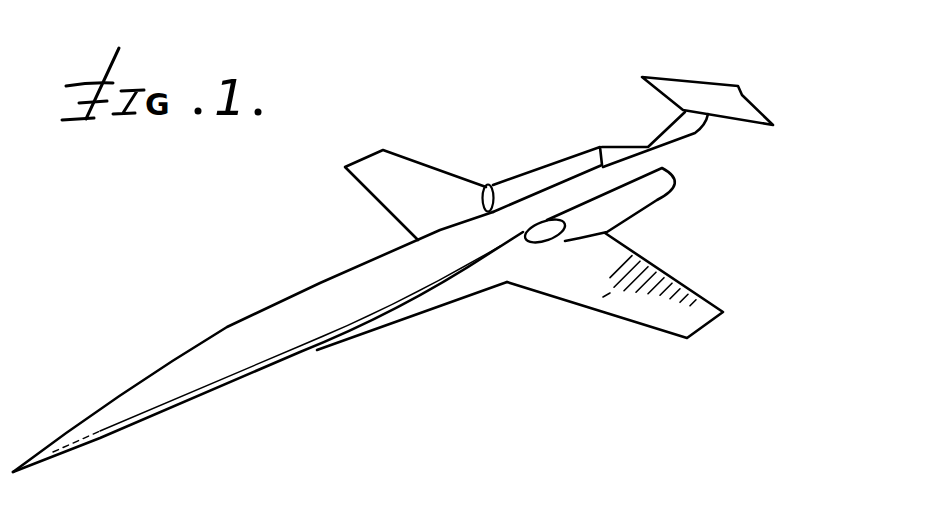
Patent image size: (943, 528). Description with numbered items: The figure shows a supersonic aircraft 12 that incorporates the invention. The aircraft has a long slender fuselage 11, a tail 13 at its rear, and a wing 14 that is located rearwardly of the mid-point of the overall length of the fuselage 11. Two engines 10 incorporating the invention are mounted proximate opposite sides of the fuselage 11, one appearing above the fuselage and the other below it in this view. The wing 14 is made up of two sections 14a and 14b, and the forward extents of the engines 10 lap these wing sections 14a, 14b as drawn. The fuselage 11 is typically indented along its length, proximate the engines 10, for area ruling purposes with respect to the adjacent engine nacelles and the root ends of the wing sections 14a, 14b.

The engine 10 is at (556, 145).
The fuselage 11 is at (227, 327).
The supersonic aircraft 12 is at (393, 357).
The tail 13 is at (772, 92).
The wing 14 is at (524, 278).
The wing section 14a is at (372, 183).
The wing section 14b is at (607, 312).